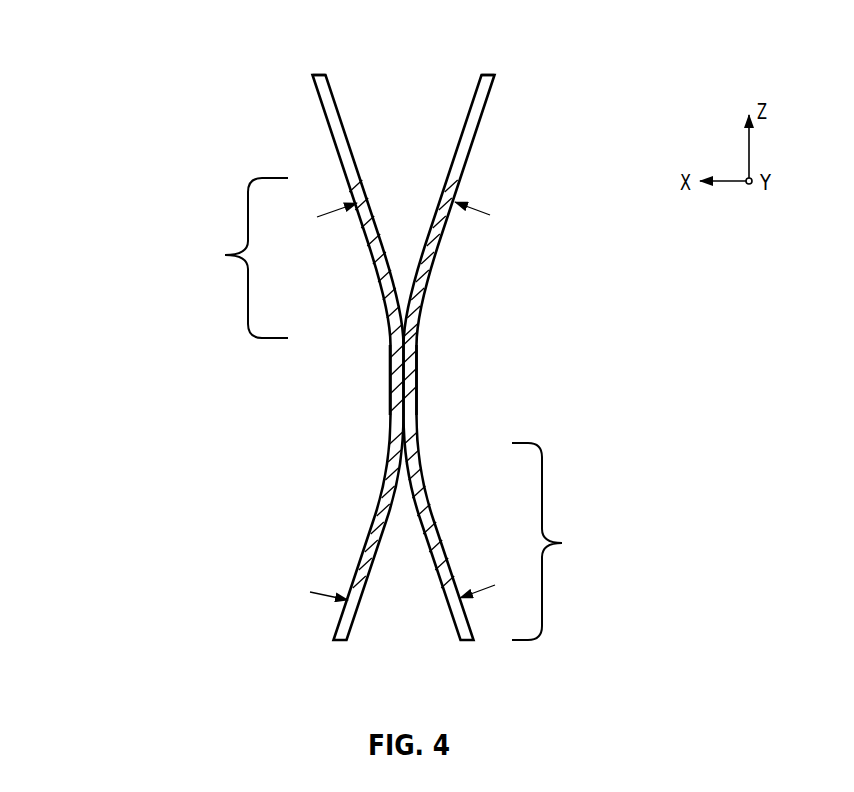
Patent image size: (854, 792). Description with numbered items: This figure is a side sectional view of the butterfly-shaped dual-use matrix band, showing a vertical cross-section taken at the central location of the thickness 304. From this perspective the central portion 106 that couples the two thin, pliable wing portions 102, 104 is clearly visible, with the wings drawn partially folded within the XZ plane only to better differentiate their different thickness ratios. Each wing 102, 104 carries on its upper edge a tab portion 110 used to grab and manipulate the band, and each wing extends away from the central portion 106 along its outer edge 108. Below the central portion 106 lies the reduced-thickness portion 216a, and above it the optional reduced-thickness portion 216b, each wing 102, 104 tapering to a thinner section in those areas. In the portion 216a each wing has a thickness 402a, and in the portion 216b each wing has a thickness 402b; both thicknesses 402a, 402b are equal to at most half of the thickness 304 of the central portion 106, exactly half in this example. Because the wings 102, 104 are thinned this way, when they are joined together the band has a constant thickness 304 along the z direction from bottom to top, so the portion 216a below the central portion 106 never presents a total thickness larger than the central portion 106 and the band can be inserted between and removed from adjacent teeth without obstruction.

The wing portion 102 is at (370, 250).
The wing portion 104 is at (440, 242).
The central portion 106 is at (392, 403).
The outer edge 108 is at (423, 352).
The tab portion 110 is at (467, 123).
The reduced-thickness portion below the central portion 216a is at (568, 538).
The reduced-thickness portion above the central portion 216b is at (220, 250).
The thickness of the central portion 304 is at (392, 387).
The wing thickness below the central portion 402a is at (445, 612).
The wing thickness above the central portion 402b is at (438, 193).